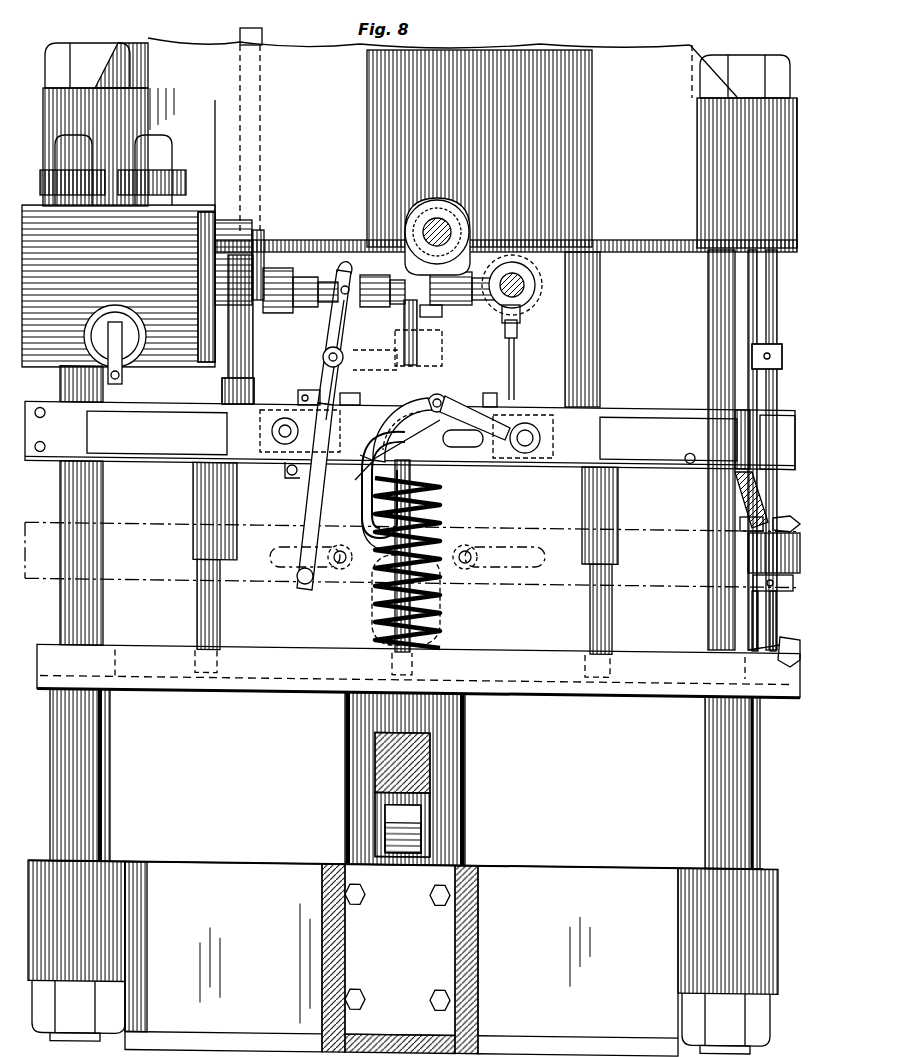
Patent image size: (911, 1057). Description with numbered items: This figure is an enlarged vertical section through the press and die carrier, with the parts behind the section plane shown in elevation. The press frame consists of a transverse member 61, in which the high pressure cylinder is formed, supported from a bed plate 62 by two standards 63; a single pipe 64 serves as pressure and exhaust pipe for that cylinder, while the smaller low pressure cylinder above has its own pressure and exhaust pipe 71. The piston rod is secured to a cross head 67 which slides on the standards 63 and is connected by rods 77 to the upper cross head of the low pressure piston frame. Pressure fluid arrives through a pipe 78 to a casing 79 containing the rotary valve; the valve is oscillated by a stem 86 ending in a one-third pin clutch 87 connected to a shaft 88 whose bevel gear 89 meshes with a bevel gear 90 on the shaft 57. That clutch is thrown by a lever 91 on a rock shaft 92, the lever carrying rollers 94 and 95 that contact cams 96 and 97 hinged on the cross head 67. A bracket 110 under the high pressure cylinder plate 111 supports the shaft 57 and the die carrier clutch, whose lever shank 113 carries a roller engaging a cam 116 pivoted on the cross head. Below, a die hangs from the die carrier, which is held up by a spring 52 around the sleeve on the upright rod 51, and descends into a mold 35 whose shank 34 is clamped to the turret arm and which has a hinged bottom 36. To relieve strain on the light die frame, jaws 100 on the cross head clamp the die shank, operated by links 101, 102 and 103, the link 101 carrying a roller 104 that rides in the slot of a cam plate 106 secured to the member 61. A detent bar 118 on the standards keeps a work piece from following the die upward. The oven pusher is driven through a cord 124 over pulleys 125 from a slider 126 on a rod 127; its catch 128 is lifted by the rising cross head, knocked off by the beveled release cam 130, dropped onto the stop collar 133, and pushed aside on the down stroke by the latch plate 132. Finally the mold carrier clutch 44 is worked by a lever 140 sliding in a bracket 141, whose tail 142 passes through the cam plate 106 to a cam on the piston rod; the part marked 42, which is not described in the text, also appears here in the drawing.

The shank 34 is at (420, 755).
The mold 35 is at (465, 786).
The hinged bottom 36 is at (465, 840).
The bearing 42 is at (405, 231).
The clutch 44 is at (428, 220).
The upright rod 51 is at (375, 598).
The spring 52 is at (440, 605).
The shaft 57 is at (522, 312).
The member 61 is at (420, 138).
The bed plate 62 is at (403, 958).
The standards 63 is at (405, 618).
The pipe 64 is at (152, 170).
The cross head 67 is at (410, 435).
The pressure and exhaust pipe 71 is at (122, 370).
The rods 77 is at (228, 383).
The pipe 78 is at (72, 170).
The casing 79 is at (143, 286).
The stem 86 is at (270, 312).
The one-third pin clutch 87 is at (338, 318).
The shaft 88 is at (478, 305).
The bevel gear 89 is at (454, 337).
The bevel gear 90 is at (532, 288).
The lever 91 is at (318, 505).
The rock shaft 92 is at (323, 359).
The roller 94 is at (351, 396).
The roller 95 is at (303, 582).
The cam 96 is at (303, 390).
The cam 97 is at (290, 475).
The jaws 100 is at (500, 476).
The link 101 is at (455, 455).
The link 102 is at (440, 500).
The link 103 is at (351, 481).
The roller 104 is at (441, 418).
The cam plate 106 is at (383, 456).
The bracket 110 is at (534, 334).
The high pressure cylinder plate 111 is at (342, 240).
The shank 113 is at (515, 360).
The cam 116 is at (485, 391).
The bar 118 is at (282, 685).
The cord 124 is at (752, 614).
The pulleys 125 is at (775, 645).
The slider 126 is at (775, 553).
The rod 127 is at (765, 285).
The catch 128 is at (740, 522).
The release cam 130 is at (755, 388).
The latch plate 132 is at (745, 478).
The stop collar 133 is at (762, 590).
The lever 140 is at (392, 318).
The bracket 141 is at (430, 332).
The tail 142 is at (425, 348).